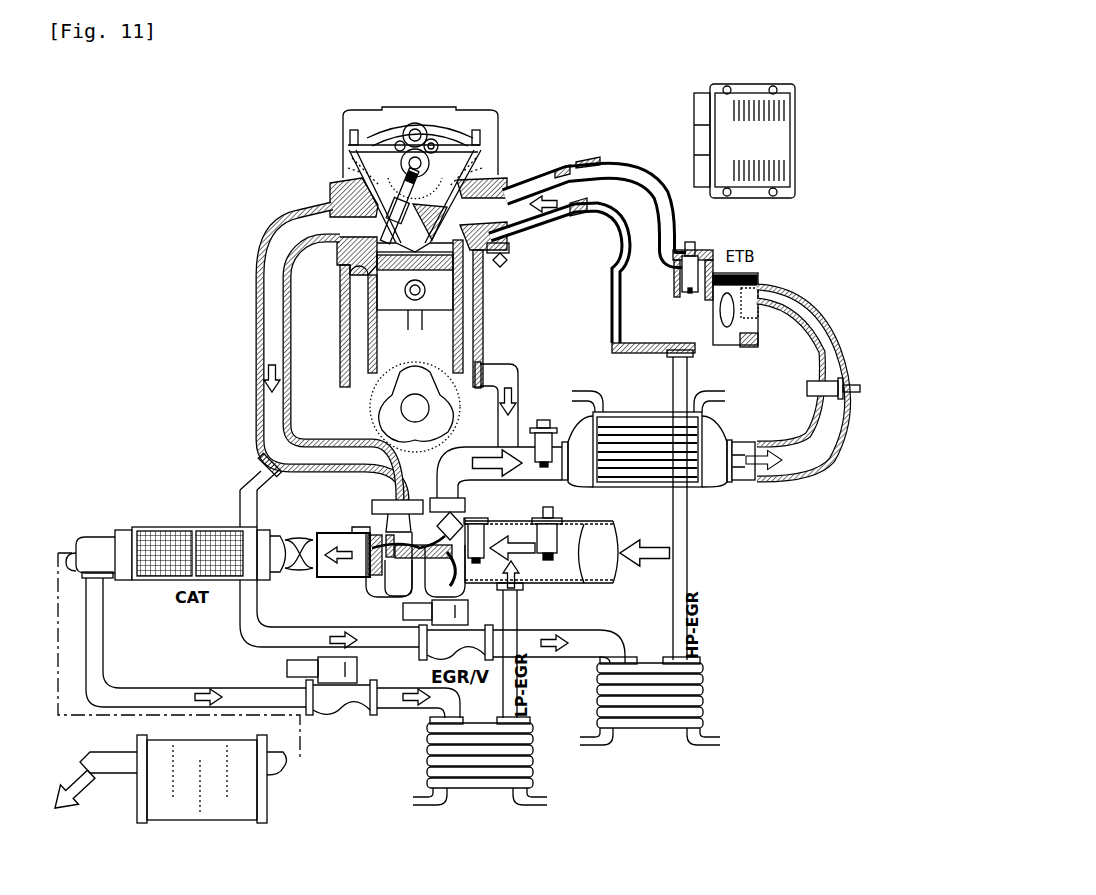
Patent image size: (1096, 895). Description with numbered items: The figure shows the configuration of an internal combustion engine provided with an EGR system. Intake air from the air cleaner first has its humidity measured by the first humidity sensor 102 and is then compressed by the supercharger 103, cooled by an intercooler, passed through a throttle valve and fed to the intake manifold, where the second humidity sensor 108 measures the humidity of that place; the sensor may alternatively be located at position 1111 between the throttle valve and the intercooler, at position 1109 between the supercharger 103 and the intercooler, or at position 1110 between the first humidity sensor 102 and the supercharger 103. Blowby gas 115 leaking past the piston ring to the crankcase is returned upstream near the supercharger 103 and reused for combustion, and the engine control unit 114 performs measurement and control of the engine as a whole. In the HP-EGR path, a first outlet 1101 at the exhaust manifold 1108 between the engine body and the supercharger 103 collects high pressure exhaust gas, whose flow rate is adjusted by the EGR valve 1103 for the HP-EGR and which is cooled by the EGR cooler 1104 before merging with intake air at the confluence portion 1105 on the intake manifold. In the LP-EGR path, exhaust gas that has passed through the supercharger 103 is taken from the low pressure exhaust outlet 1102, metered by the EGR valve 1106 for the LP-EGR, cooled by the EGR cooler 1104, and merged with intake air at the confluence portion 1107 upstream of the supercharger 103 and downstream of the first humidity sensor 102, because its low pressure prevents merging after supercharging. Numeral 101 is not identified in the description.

The intake passage 101 is at (660, 553).
The first humidity sensor 102 is at (560, 507).
The supercharger 103 is at (383, 520).
The second humidity sensor 108 is at (700, 243).
The engine control unit 114 is at (705, 112).
The blowby gas 115 is at (543, 422).
The first outlet 1101 is at (252, 476).
The low pressure exhaust outlet 1102 is at (104, 578).
The EGR valve for the HP-EGR 1103 is at (400, 603).
The EGR cooler 1104 is at (530, 737).
The confluence portion 1105 is at (640, 345).
The EGR valve for the LP-EGR 1106 is at (316, 718).
The confluence portion 1107 is at (528, 568).
The exhaust manifold 1108 is at (262, 232).
The second humidity sensor position between supercharger and intercooler 1109 is at (577, 388).
The second humidity sensor position between first humidity sensor and supercharger 1110 is at (468, 476).
The second humidity sensor position between throttle valve and intercooler 1111 is at (851, 380).